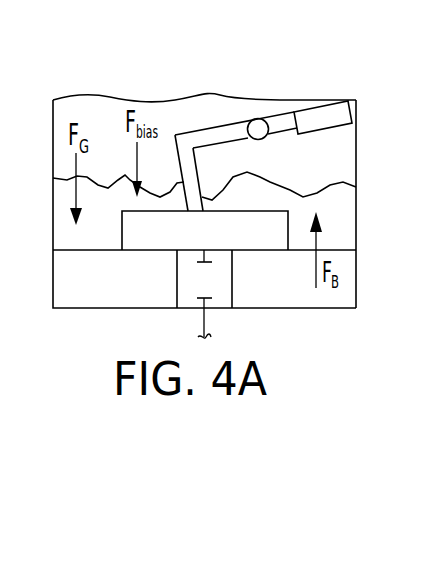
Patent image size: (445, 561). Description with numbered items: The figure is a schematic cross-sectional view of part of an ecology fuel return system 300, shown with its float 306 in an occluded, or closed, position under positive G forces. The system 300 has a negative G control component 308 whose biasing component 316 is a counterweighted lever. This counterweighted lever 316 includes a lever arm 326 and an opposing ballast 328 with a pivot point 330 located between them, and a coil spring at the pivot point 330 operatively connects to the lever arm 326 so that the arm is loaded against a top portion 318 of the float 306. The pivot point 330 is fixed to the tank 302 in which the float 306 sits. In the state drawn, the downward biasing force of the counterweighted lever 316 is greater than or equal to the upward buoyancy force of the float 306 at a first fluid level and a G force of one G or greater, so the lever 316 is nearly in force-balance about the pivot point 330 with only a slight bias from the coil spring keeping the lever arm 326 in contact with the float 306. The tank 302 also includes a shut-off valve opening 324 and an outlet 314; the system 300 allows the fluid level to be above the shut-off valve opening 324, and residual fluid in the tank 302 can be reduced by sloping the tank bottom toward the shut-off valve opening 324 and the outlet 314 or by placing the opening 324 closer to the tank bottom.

The ecology fuel return system 300 is at (112, 77).
The tank 302 is at (246, 195).
The float 306 is at (230, 243).
The negative G control component 308 is at (360, 155).
The outlet 314 is at (232, 308).
The biasing component 316 is at (299, 79).
The top portion 318 is at (279, 181).
The shut-off valve opening 324 is at (177, 250).
The lever arm 326 is at (207, 128).
The opposing ballast 328 is at (343, 104).
The pivot point 330 is at (255, 118).